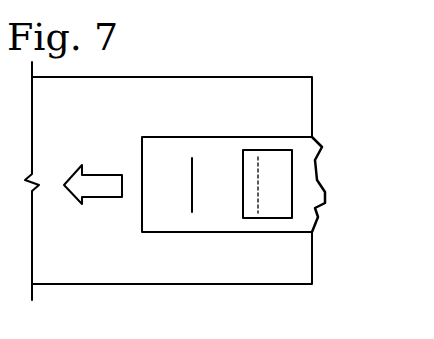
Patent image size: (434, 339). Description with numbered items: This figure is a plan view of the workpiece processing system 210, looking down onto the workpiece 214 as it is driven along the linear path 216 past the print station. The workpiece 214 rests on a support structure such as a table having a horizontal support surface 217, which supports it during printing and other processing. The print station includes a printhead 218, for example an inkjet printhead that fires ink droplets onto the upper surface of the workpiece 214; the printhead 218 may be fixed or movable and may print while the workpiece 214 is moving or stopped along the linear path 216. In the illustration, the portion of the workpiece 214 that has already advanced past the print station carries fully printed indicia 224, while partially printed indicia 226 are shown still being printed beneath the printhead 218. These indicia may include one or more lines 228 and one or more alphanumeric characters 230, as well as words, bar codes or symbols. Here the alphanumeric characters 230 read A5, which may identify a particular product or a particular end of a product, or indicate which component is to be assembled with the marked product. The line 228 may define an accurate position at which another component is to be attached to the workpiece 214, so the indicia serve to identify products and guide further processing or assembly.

The workpiece processing system 210 is at (247, 53).
The workpiece 214 is at (318, 150).
The linear path 216 is at (107, 174).
The horizontal support surface 217 is at (48, 108).
The printhead 218 is at (280, 210).
The fully printed indicia 224 is at (145, 189).
The partially printed indicia 226 is at (230, 150).
The line 228 is at (194, 206).
The alphanumeric character 230 is at (166, 194).